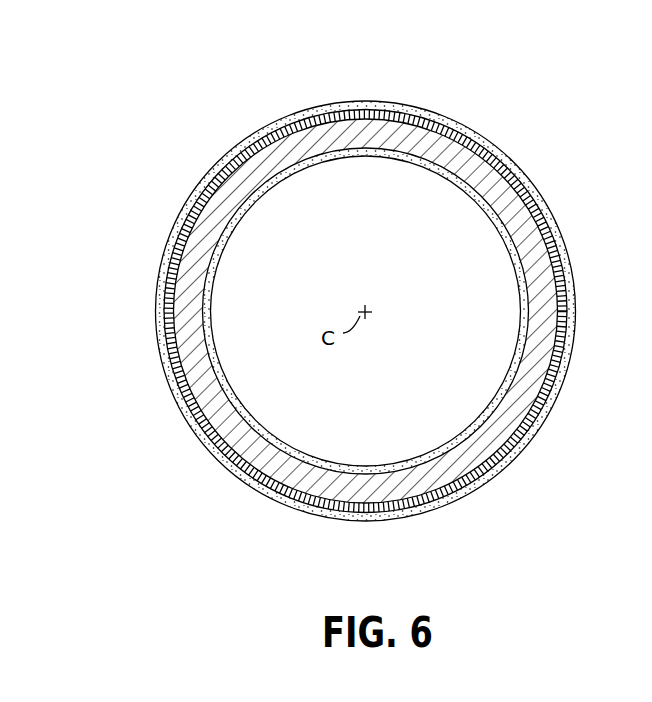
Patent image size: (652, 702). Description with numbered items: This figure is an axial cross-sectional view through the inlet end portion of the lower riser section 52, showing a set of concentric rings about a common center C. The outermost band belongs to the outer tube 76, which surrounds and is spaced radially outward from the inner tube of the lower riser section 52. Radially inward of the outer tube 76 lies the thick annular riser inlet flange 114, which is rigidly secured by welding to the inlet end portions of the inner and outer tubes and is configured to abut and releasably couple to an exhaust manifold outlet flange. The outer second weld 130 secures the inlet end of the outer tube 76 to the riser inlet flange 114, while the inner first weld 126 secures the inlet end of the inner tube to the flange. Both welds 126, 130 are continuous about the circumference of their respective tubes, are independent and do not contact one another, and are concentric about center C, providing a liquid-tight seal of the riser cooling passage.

The lower riser section 52 is at (399, 99).
The outer second weld 130 is at (488, 142).
The outer tube 76 is at (519, 195).
The riser inlet flange 114 is at (543, 270).
The inner first weld 126 is at (485, 214).